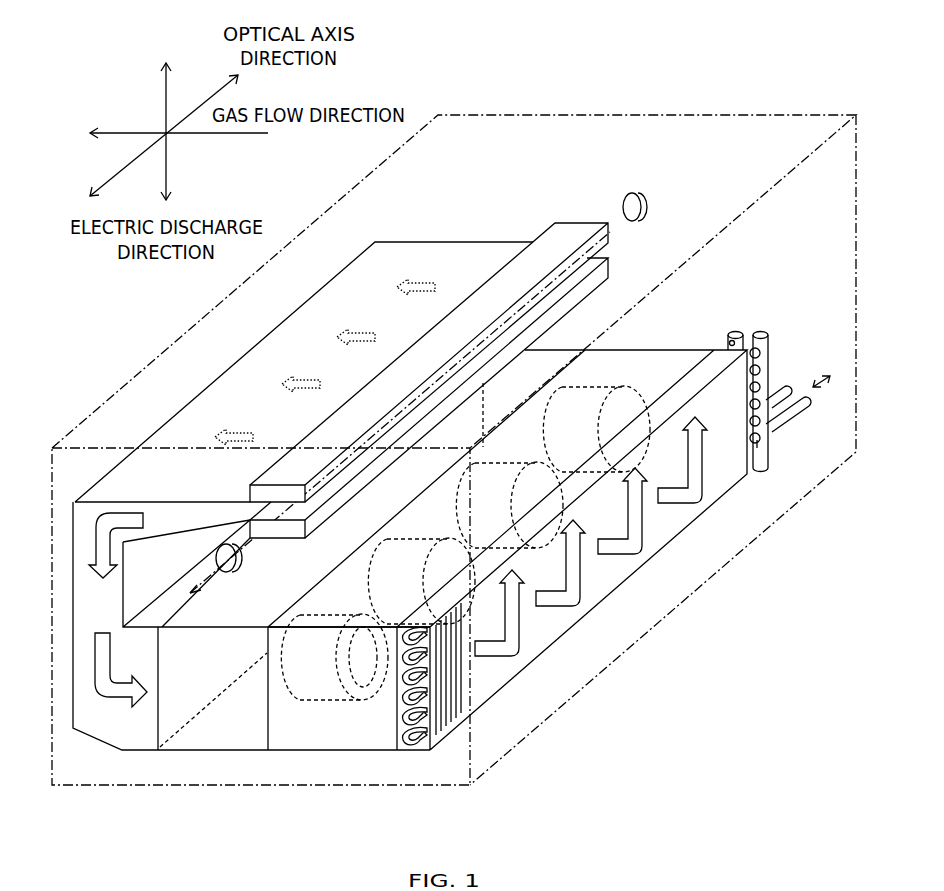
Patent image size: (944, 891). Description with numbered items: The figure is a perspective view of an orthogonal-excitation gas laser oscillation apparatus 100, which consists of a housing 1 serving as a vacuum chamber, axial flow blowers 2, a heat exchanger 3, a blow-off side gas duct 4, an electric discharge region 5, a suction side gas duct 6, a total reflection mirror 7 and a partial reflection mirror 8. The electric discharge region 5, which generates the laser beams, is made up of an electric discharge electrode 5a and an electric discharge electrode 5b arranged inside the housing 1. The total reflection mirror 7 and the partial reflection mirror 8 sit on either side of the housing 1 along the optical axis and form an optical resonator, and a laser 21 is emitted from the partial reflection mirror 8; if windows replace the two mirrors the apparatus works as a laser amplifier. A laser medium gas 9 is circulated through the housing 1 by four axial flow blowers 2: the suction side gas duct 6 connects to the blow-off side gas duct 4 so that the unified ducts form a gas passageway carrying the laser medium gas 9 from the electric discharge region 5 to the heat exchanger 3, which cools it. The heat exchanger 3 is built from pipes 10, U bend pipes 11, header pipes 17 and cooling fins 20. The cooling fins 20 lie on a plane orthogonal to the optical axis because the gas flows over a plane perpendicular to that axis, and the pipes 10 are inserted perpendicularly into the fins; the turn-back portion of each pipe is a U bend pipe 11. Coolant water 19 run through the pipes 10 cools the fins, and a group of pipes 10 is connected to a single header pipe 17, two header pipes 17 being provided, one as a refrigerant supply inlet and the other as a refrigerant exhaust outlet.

The gas laser oscillation apparatus 100 is at (850, 58).
The housing 1 is at (598, 114).
The axial flow blowers 2 is at (542, 437).
The heat exchanger 3 is at (522, 683).
The blow-off side gas duct 4 is at (507, 533).
The electric discharge region 5 is at (455, 355).
The electric discharge electrode 5a is at (608, 232).
The electric discharge electrode 5b is at (608, 266).
The suction side gas duct 6 is at (469, 238).
The total reflection mirror 7 is at (648, 208).
The partial reflection mirror 8 is at (240, 565).
The laser medium gas 9 is at (582, 555).
The pipes 10 is at (757, 440).
The U bend pipes 11 is at (405, 751).
The header pipes 17 is at (735, 334).
The coolant water 19 is at (793, 390).
The cooling fins 20 is at (445, 740).
The laser 21 is at (203, 592).